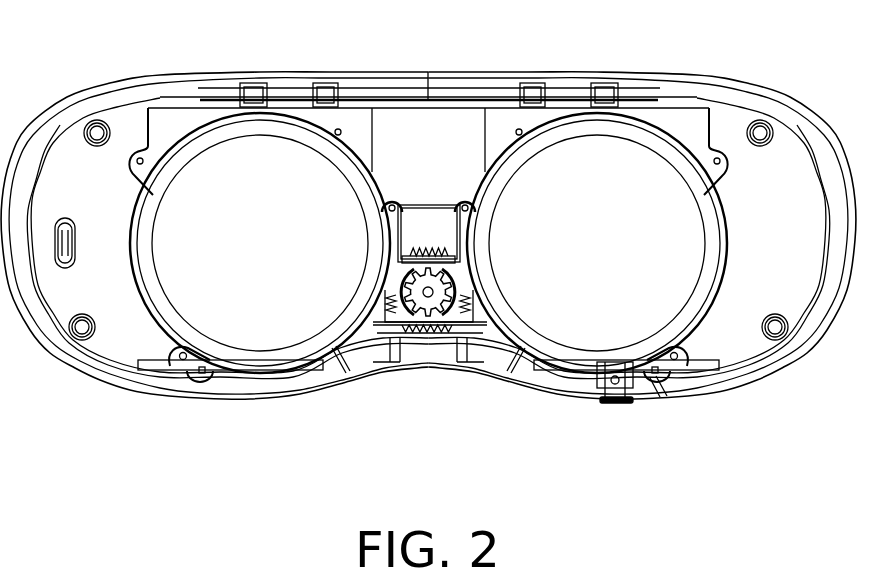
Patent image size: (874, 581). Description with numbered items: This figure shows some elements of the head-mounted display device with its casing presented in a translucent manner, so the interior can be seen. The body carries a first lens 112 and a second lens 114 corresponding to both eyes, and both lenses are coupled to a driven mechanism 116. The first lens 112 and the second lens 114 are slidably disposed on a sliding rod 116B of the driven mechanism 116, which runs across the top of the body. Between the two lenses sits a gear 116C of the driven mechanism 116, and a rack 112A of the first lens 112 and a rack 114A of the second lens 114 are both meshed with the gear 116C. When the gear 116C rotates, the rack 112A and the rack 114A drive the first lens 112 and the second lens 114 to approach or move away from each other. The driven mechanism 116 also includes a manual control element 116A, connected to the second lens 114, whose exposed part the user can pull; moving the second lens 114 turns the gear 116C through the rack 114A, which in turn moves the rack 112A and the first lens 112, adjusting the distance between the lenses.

The first lens 112 is at (650, 175).
The rack of the first lens 112A is at (475, 322).
The second lens 114 is at (290, 152).
The rack of the second lens 114A is at (393, 322).
The driven mechanism 116 is at (428, 238).
The manual control element 116A is at (617, 405).
The sliding rod 116B is at (565, 92).
The gear 116C is at (428, 317).